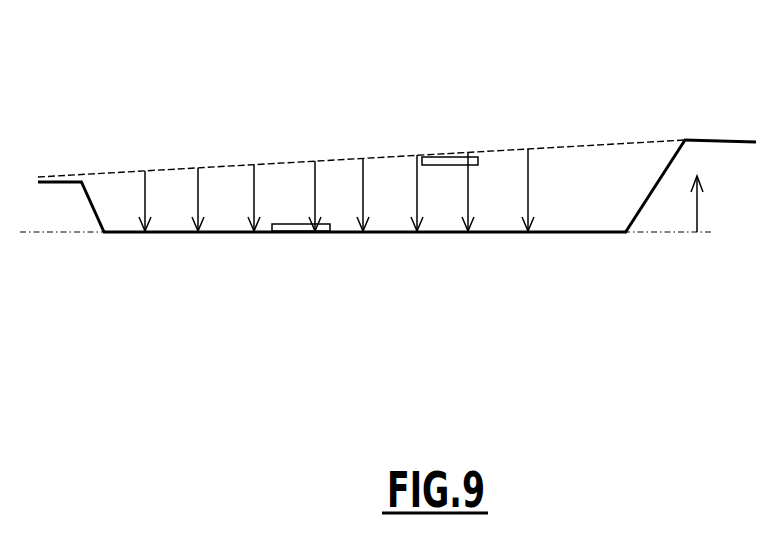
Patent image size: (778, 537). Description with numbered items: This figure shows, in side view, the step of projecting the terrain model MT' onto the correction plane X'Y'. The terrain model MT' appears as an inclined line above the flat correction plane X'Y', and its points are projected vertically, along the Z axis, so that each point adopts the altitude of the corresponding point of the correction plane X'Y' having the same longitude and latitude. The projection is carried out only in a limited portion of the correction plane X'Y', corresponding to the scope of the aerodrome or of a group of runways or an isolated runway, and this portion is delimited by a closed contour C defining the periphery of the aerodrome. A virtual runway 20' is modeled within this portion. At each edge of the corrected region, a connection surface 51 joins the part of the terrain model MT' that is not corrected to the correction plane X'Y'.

The connection surface 51 is at (90, 198).
The terrain model MT' is at (361, 111).
The virtual runway 20' is at (450, 217).
The closed contour C is at (102, 236).
The correction plane X'Y' is at (367, 270).
The Z axis Z is at (697, 192).